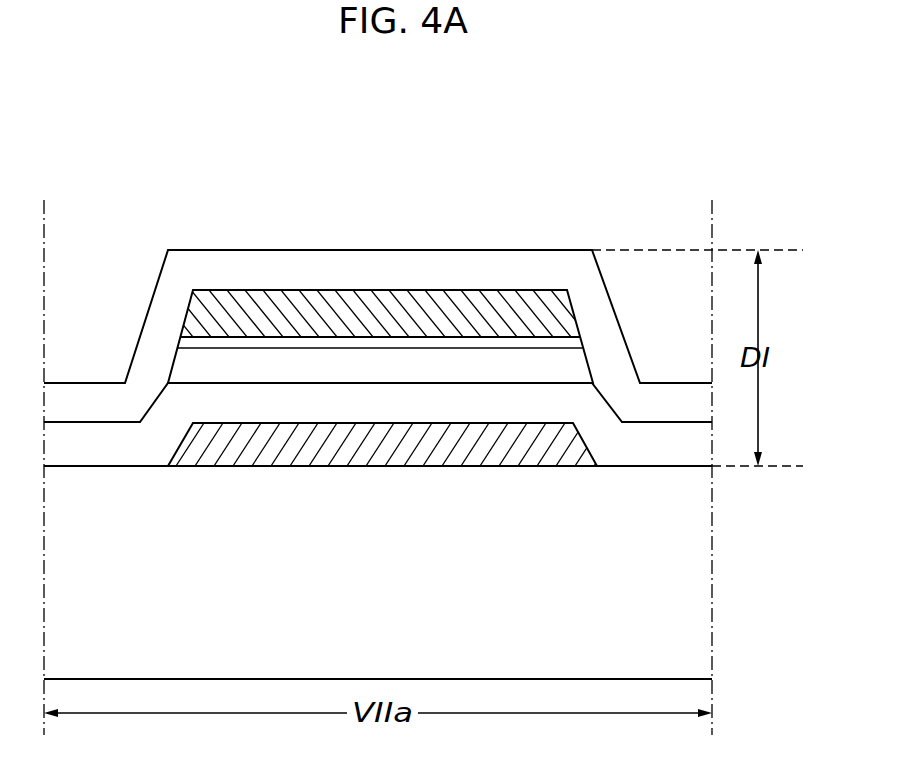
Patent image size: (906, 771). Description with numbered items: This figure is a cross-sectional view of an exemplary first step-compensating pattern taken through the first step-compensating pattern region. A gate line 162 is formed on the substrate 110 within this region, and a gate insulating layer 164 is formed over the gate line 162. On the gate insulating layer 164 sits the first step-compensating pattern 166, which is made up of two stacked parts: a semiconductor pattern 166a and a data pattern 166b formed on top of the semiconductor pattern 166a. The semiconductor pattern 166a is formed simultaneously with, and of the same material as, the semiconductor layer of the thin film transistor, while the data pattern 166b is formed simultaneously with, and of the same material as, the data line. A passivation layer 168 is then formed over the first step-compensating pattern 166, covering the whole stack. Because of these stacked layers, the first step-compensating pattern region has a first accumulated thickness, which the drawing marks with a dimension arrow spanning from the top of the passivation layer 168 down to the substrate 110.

The substrate 110 is at (397, 622).
The gate line 162 is at (440, 450).
The gate insulating layer 164 is at (645, 443).
The first step-compensating pattern 166 is at (339, 348).
The semiconductor pattern 166a is at (300, 342).
The data pattern 166b is at (343, 315).
The passivation layer 168 is at (460, 262).